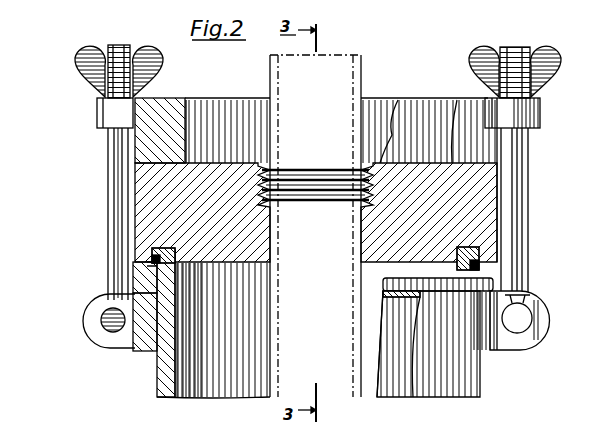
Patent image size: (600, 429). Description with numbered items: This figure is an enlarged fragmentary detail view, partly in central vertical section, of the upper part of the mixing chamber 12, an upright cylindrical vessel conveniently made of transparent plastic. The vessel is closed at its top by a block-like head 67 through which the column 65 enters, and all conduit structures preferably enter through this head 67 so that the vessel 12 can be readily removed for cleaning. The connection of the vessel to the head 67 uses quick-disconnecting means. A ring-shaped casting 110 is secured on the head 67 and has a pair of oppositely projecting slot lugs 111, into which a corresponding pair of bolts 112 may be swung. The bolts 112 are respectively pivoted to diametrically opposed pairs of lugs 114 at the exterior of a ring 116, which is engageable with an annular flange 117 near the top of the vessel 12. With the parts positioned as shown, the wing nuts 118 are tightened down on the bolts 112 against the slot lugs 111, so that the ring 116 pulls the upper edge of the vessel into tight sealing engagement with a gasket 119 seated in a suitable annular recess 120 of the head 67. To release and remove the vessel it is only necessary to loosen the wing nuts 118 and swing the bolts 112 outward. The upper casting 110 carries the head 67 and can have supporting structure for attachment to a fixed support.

The mixing chamber 12 is at (599, 251).
The column 65 is at (363, 76).
The head 67 is at (483, 226).
The ring-shaped casting 110 is at (182, 99).
The slot lugs 111 is at (96, 113).
The bolts 112 is at (110, 190).
The lugs 114 is at (87, 318).
The ring 116 is at (145, 352).
The annular flange 117 is at (135, 277).
The wing nuts 118 is at (77, 61).
The gasket 119 is at (150, 254).
The annular recess 120 is at (160, 252).